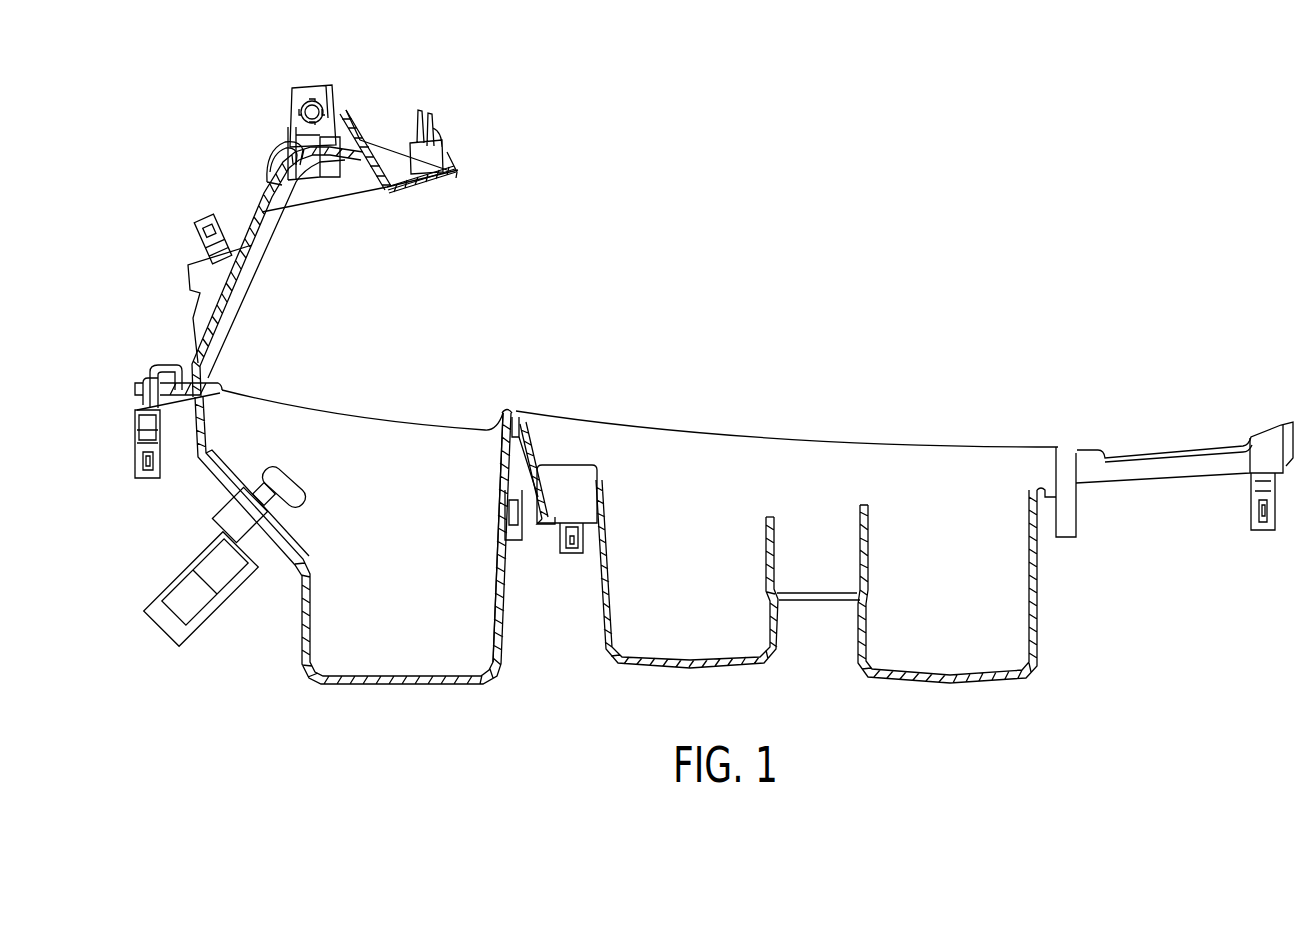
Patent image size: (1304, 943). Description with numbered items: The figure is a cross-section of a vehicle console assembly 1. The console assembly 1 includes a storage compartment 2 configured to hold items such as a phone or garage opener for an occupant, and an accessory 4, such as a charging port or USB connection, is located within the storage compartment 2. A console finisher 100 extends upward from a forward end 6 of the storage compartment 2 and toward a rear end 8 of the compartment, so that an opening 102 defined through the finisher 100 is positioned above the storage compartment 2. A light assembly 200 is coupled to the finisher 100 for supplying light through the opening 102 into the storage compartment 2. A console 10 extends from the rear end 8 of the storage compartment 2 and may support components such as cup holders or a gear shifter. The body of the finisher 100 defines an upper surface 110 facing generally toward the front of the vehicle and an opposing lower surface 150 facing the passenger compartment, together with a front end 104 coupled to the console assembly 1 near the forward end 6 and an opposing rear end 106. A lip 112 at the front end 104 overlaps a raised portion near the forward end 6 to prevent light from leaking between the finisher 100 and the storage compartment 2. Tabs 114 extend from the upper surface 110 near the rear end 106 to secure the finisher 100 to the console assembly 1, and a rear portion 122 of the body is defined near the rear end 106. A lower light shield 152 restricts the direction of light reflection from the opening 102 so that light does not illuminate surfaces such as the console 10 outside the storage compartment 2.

The vehicle console assembly 1 is at (1008, 98).
The storage compartment 2 is at (408, 642).
The accessory 4 is at (238, 533).
The forward end 6 is at (216, 380).
The rear end 8 is at (496, 402).
The console 10 is at (827, 424).
The console finisher 100 is at (262, 205).
The opening 102 is at (320, 134).
The front end 104 is at (147, 388).
The rear end 106 is at (466, 169).
The upper surface 110 is at (262, 188).
The lip 112 is at (157, 369).
The tabs 114 is at (421, 108).
The rear portion 122 is at (426, 196).
The lower surface 150 is at (262, 252).
The lower light shield 152 is at (338, 176).
The light assembly 200 is at (318, 88).